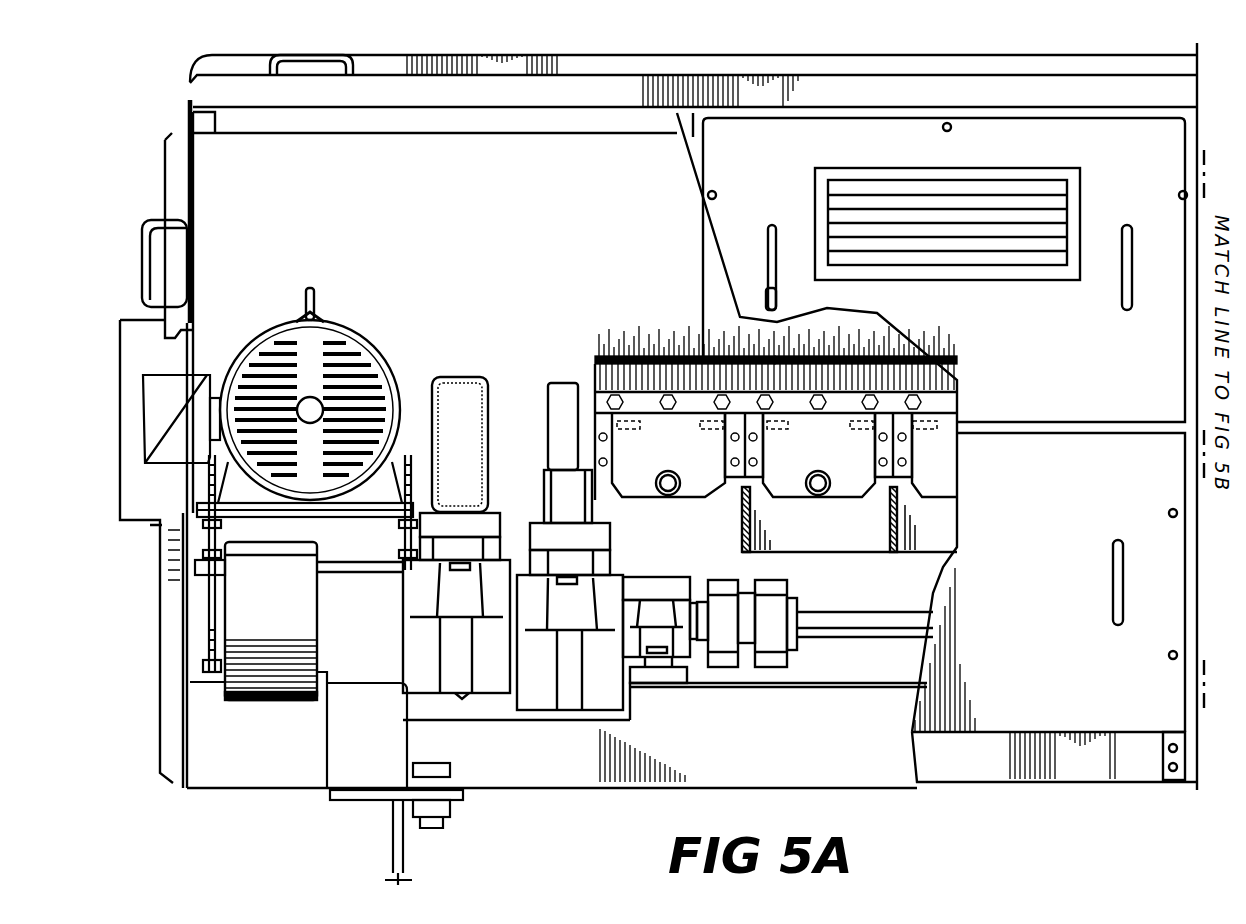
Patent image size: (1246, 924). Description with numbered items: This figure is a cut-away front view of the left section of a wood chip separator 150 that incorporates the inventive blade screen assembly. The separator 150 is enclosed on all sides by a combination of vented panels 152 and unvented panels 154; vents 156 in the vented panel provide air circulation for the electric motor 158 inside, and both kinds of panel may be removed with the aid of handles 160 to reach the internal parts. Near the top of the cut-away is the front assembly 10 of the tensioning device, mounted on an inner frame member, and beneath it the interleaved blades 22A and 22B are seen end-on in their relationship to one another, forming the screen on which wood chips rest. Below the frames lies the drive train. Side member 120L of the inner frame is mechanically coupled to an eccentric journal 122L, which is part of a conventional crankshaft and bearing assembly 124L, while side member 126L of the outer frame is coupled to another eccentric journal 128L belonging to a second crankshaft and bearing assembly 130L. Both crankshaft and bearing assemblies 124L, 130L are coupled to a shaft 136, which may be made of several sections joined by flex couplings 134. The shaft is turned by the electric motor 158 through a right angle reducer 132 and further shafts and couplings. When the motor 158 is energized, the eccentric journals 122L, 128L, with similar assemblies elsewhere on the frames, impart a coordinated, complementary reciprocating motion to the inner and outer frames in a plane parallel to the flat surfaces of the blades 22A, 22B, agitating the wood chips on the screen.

The wood chip separator 150 is at (147, 80).
The vented panels 152 is at (1030, 345).
The unvented panels 154 is at (1052, 605).
The vents 156 is at (990, 190).
The handles 160 is at (1130, 238).
The electric motor 158 is at (352, 333).
The right angle reducer 132 is at (268, 678).
The crankshaft and bearing assembly 130L is at (483, 680).
The side member of the inner frame 120L is at (497, 527).
The eccentric journal 122L is at (597, 537).
The crankshaft and bearing assembly 124L is at (607, 670).
The side member of the outer frame 126L is at (432, 405).
The eccentric journal 128L is at (548, 398).
The flex couplings 134 is at (725, 656).
The shaft 136 is at (897, 626).
The front assembly of the tensioning device 10 is at (716, 490).
The interleaved blades 22A is at (667, 347).
The interleaved blades 22B is at (622, 348).